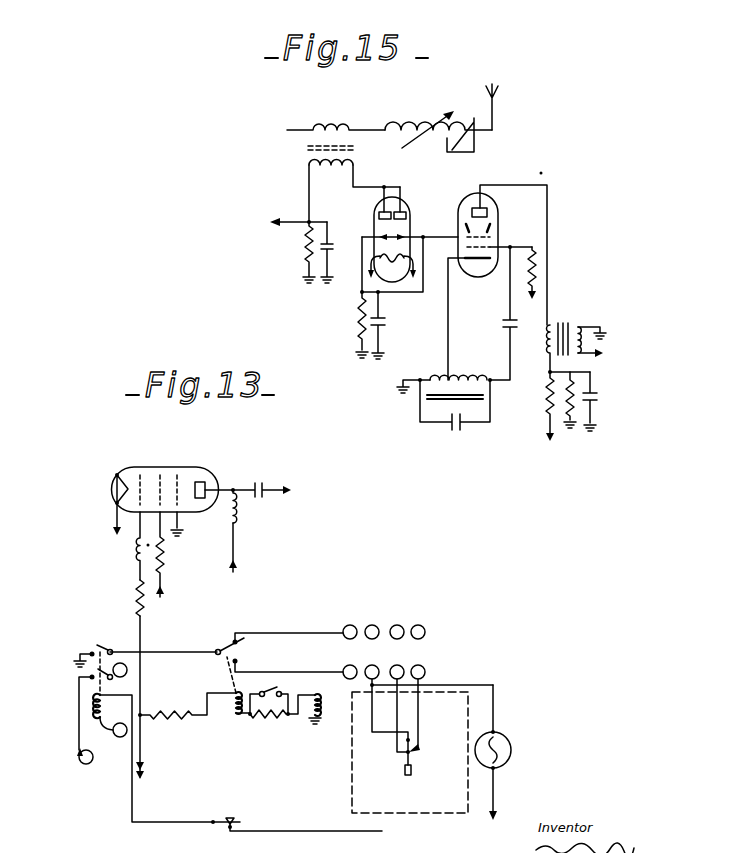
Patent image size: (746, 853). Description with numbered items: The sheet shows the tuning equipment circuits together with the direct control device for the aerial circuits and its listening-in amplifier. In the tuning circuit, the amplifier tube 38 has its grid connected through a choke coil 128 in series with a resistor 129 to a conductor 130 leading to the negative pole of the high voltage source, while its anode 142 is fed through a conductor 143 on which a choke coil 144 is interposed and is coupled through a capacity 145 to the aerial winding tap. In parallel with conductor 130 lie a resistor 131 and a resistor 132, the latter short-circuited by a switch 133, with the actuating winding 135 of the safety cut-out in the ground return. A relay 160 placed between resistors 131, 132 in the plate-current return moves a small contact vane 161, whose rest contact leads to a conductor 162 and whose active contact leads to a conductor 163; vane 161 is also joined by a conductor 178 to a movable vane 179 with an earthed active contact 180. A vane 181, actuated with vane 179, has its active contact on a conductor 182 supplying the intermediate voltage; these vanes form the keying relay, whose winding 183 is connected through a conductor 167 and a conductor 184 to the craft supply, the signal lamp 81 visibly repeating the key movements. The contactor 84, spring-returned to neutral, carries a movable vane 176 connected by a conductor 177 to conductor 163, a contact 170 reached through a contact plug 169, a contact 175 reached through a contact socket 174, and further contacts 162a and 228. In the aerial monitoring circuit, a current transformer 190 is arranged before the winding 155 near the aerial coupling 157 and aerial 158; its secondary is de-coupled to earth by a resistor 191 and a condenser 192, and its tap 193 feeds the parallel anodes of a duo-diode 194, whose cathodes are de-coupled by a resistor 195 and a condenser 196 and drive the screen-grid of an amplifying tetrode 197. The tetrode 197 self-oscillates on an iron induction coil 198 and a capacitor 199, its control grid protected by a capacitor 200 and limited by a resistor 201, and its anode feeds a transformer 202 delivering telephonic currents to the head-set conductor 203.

In FIG. 15, the current transformer 190 is at (340, 128).
In FIG. 15, the winding 155 is at (402, 124).
In FIG. 15, the antenna coupling element 157 is at (467, 121).
In FIG. 15, the antenna 158 is at (496, 112).
In FIG. 15, the tap 193 is at (288, 216).
In FIG. 15, the resistor 191 is at (305, 240).
In FIG. 15, the condenser 192 is at (320, 265).
In FIG. 15, the duo-diode 194 is at (410, 210).
In FIG. 15, the resistor 195 is at (360, 320).
In FIG. 15, the condenser 196 is at (382, 325).
In FIG. 15, the amplifying tetrode 197 is at (497, 212).
In FIG. 15, the iron induction coil 198 is at (462, 378).
In FIG. 15, the capacitor 199 is at (457, 430).
In FIG. 15, the capacitor 200 is at (543, 344).
In FIG. 15, the resistor 201 is at (536, 265).
In FIG. 15, the transformer 202 is at (567, 322).
In FIG. 15, the conductor 203 is at (606, 351).
In FIG. 13, the tube 38 is at (178, 467).
In FIG. 13, the anode 142 is at (206, 488).
In FIG. 13, the capacity 145 is at (266, 486).
In FIG. 13, the choke coil 144 is at (240, 516).
In FIG. 13, the conductor 143 is at (238, 560).
In FIG. 13, the choke coil 128 is at (136, 557).
In FIG. 13, the resistor 129 is at (136, 596).
In FIG. 13, the conductor 130 is at (142, 748).
In FIG. 13, the resistor 131 is at (174, 719).
In FIG. 13, the resistor 132 is at (272, 722).
In FIG. 13, the switch 133 is at (280, 690).
In FIG. 13, the actuating winding 135 is at (320, 724).
In FIG. 13, the relay 160 is at (233, 714).
In FIG. 13, the contact vane 161 is at (221, 648).
In FIG. 13, the conductor 162 is at (274, 630).
In FIG. 13, the contact 162a is at (352, 626).
In FIG. 13, the conductor 163 is at (268, 671).
In FIG. 13, the conductor 167 is at (105, 696).
In FIG. 13, the contact plug 169 is at (401, 626).
In FIG. 13, the contact 170 is at (398, 755).
In FIG. 13, the contact socket 174 is at (426, 632).
In FIG. 13, the contact 175 is at (411, 742).
In FIG. 13, the movable vane 176 is at (412, 754).
In FIG. 13, the conductor 177 is at (368, 722).
In FIG. 13, the conductor 178 is at (160, 650).
In FIG. 13, the movable vane 179 is at (100, 645).
In FIG. 13, the active contact 180 is at (90, 652).
In FIG. 13, the vane 181 is at (91, 679).
In FIG. 13, the conductor 182 is at (79, 737).
In FIG. 13, the winding 183 is at (90, 751).
In FIG. 13, the conductor 184 is at (117, 738).
In FIG. 13, the contact 228 is at (222, 821).
In FIG. 13, the change over switch 84 is at (412, 772).
In FIG. 13, the signal lamp 81 is at (513, 750).